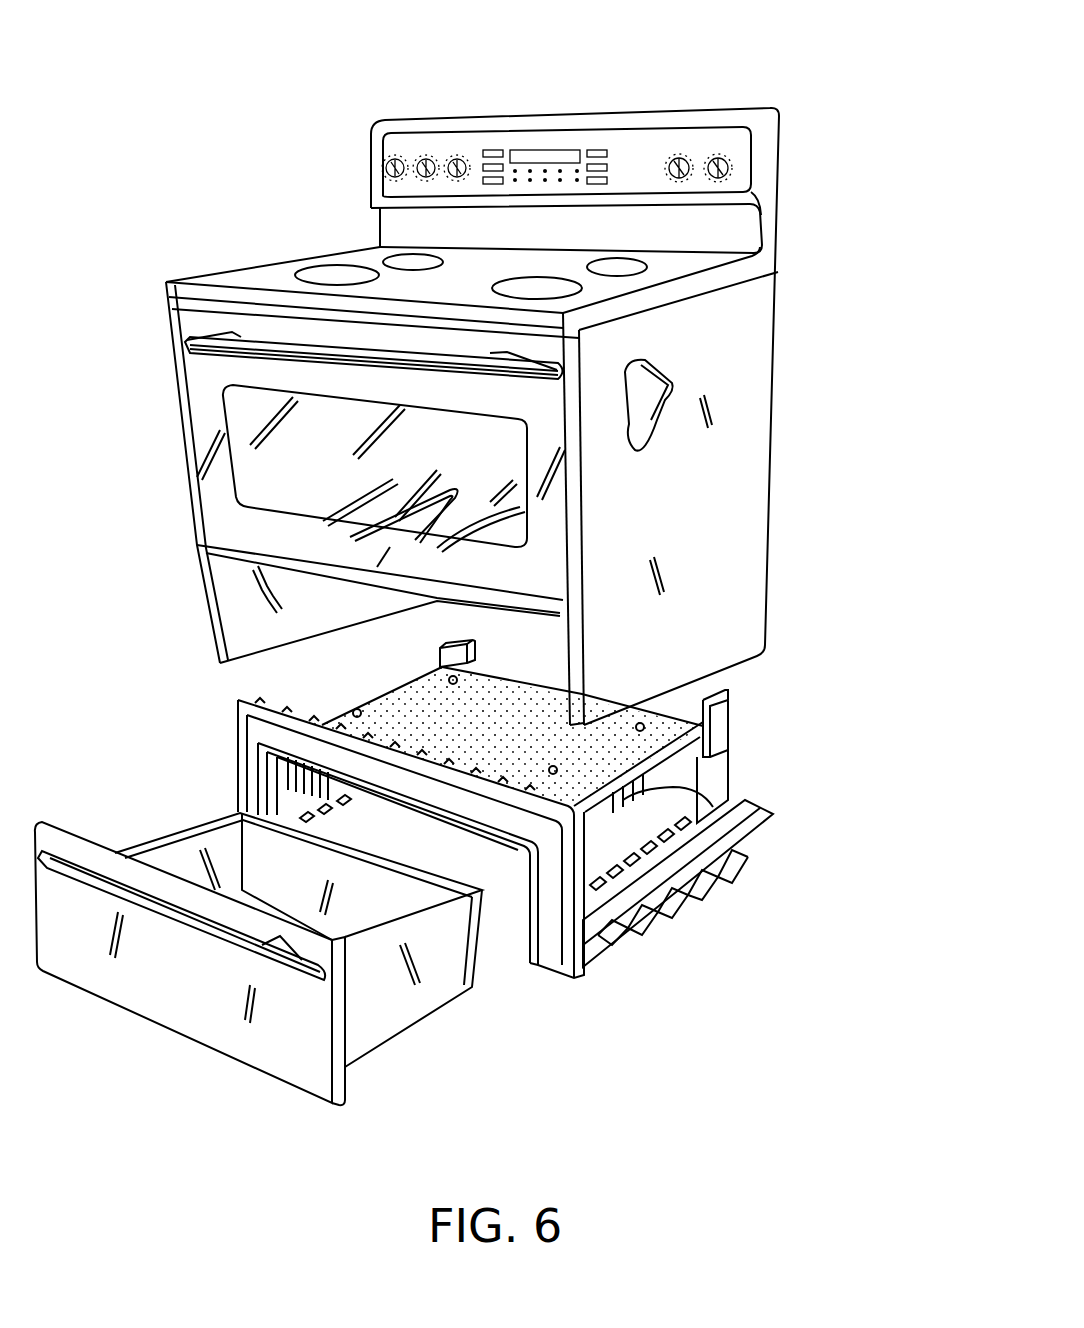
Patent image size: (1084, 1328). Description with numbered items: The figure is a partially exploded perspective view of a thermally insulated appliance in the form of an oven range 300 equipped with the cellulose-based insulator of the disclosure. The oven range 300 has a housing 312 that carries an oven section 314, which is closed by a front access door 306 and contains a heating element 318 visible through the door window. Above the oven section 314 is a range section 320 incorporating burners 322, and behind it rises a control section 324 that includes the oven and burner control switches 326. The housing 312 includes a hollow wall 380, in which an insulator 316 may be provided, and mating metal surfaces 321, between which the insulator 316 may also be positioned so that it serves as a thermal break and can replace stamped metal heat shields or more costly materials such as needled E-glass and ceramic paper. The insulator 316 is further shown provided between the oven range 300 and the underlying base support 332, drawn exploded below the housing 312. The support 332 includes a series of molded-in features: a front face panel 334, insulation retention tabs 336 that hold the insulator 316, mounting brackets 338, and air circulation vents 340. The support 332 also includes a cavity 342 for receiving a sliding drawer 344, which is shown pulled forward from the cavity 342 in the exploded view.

The oven range 300 is at (703, 76).
The front access door 306 is at (202, 372).
The housing 312 is at (750, 420).
The oven section 314 is at (153, 491).
The insulator 316 is at (528, 712).
The heating element 318 is at (358, 488).
The range section 320 is at (203, 232).
The mating metal surfaces 321 is at (732, 288).
The burners 322 is at (335, 268).
The control section 324 is at (800, 196).
The oven and burner control switches 326 is at (390, 165).
The base support 332 is at (730, 775).
The front face panel 334 is at (283, 738).
The insulation retention tabs 336 is at (448, 680).
The mounting brackets 338 is at (440, 653).
The air circulation vents 340 is at (713, 807).
The cavity 342 is at (503, 882).
The sliding drawer 344 is at (238, 1043).
The hollow wall 380 is at (673, 382).